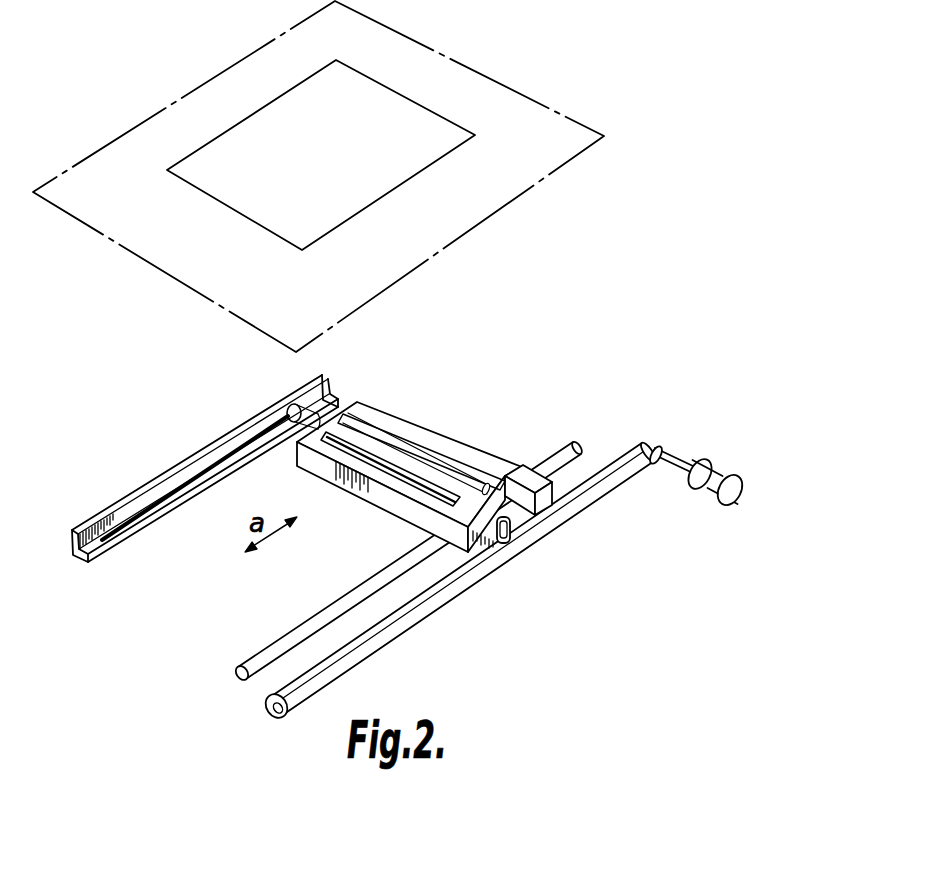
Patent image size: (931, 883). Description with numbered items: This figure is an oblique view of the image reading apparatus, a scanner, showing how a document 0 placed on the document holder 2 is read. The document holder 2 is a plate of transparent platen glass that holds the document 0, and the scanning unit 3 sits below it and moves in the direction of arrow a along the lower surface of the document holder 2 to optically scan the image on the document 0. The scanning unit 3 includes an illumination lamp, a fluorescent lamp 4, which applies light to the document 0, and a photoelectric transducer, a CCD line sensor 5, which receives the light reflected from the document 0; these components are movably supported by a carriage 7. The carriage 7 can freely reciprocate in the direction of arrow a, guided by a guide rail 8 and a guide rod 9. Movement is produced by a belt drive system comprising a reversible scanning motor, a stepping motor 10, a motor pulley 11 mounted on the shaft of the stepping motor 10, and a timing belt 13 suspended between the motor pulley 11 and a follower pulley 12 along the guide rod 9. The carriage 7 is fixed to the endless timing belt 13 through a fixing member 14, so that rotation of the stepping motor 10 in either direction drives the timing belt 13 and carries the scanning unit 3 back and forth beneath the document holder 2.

The document 0 is at (433, 128).
The document holder 2 is at (556, 108).
The scanning unit 3 is at (507, 440).
The fluorescent lamp 4 is at (406, 445).
The CCD line sensor 5 is at (345, 443).
The carriage 7 is at (372, 492).
The guide rail 8 is at (160, 490).
The guide rod 9 is at (259, 652).
The stepping motor 10 is at (710, 470).
The motor pulley 11 is at (660, 446).
The follower pulley 12 is at (266, 718).
The timing belt 13 is at (390, 638).
The fixing member 14 is at (533, 539).